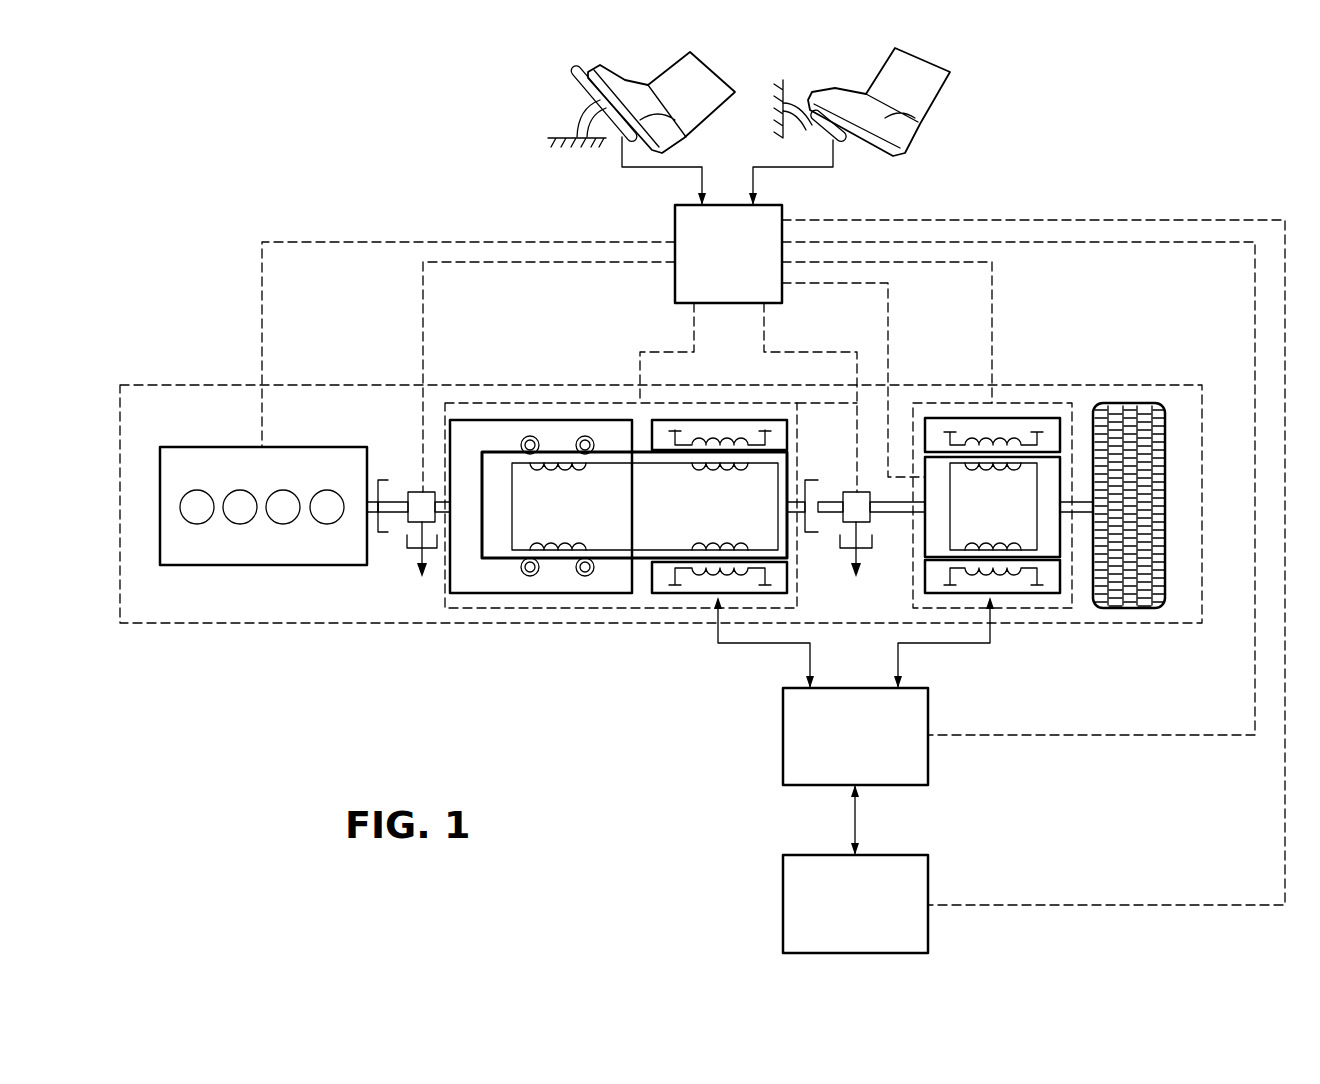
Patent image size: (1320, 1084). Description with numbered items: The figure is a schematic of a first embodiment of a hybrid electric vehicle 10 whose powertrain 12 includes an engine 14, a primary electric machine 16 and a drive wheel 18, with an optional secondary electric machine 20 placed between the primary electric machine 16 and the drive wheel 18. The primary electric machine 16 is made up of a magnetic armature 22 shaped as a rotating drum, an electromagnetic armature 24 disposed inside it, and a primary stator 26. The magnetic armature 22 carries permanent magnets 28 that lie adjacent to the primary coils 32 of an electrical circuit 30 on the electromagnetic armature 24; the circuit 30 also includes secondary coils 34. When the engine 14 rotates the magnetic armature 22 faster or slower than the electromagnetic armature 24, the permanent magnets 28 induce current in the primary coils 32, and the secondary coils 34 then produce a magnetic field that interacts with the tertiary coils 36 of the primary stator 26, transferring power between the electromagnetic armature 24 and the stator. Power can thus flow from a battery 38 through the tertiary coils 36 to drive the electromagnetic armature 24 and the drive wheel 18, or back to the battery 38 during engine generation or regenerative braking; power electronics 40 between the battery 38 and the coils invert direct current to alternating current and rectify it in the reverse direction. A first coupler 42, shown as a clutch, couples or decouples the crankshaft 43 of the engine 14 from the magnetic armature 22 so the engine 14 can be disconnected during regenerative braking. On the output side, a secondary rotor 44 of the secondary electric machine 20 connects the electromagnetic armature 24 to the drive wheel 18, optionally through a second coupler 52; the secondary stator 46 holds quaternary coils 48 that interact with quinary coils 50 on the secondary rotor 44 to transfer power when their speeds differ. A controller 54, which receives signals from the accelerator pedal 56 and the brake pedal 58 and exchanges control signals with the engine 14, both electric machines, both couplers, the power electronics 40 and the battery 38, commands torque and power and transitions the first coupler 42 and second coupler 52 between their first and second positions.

The hybrid electric vehicle 10 is at (268, 88).
The powertrain 12 is at (218, 385).
The engine 14 is at (215, 447).
The primary electric machine 16 is at (655, 395).
The drive wheel 18 is at (1130, 403).
The secondary electric machine 20 is at (967, 403).
The magnetic armature 22 is at (500, 605).
The electromagnetic armature 24 is at (642, 575).
The primary stator 26 is at (700, 605).
The permanent magnets 28 is at (535, 433).
The electrical circuit 30 is at (505, 508).
The primary coils 32 is at (560, 472).
The secondary coils 34 is at (735, 472).
The tertiary coils 36 is at (740, 440).
The battery 38 is at (783, 903).
The power electronics 40 is at (783, 757).
The first coupler 42 is at (396, 472).
The crankshaft 43 is at (375, 515).
The secondary rotor 44 is at (918, 530).
The secondary stator 46 is at (1010, 578).
The quaternary coils 48 is at (1000, 445).
The quinary coils 50 is at (1012, 542).
The second coupler 52 is at (823, 472).
The controller 54 is at (675, 228).
The accelerator pedal 56 is at (585, 92).
The brake pedal 58 is at (855, 146).